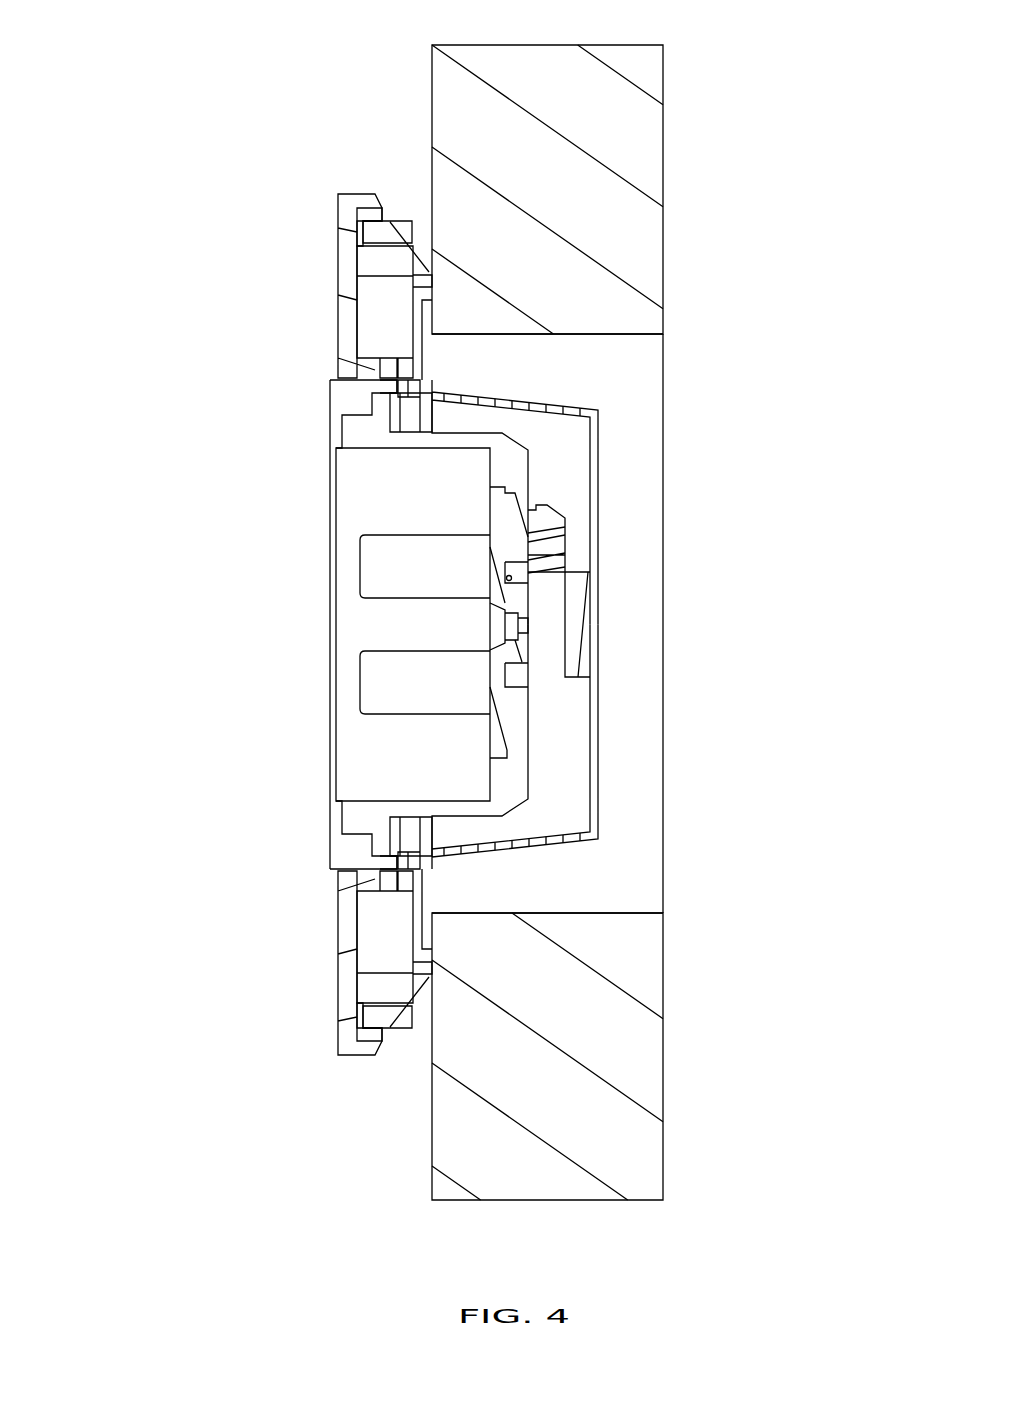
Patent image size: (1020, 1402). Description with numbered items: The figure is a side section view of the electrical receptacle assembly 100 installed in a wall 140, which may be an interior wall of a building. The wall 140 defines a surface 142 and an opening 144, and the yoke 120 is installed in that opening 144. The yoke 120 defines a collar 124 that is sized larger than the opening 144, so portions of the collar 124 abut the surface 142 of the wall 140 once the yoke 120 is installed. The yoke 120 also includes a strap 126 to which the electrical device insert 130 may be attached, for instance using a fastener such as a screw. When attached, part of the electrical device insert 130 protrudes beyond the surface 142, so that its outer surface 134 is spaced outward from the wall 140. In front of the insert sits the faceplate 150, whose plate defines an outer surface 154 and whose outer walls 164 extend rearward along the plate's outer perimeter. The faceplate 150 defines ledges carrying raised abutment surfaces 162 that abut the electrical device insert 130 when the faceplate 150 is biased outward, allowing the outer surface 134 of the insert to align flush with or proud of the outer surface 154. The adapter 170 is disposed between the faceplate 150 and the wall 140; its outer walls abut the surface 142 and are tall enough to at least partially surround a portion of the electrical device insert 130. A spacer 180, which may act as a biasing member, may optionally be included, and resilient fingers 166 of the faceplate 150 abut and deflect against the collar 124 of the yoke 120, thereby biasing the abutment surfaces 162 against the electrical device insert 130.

The electrical receptacle assembly 100 is at (150, 257).
The yoke 120 is at (600, 497).
The collar 124 is at (432, 352).
The strap 126 is at (590, 630).
The electrical device insert 130 is at (330, 555).
The outer surface 134 is at (377, 858).
The wall 140 is at (633, 252).
The surface 142 is at (430, 1130).
The opening 144 is at (632, 758).
The faceplate 150 is at (338, 243).
The outer surface 154 is at (337, 940).
The abutment surfaces 162 is at (380, 392).
The outer walls 164 is at (362, 194).
The resilient fingers 166 is at (413, 390).
The adapter 170 is at (408, 222).
The spacer 180 is at (377, 265).